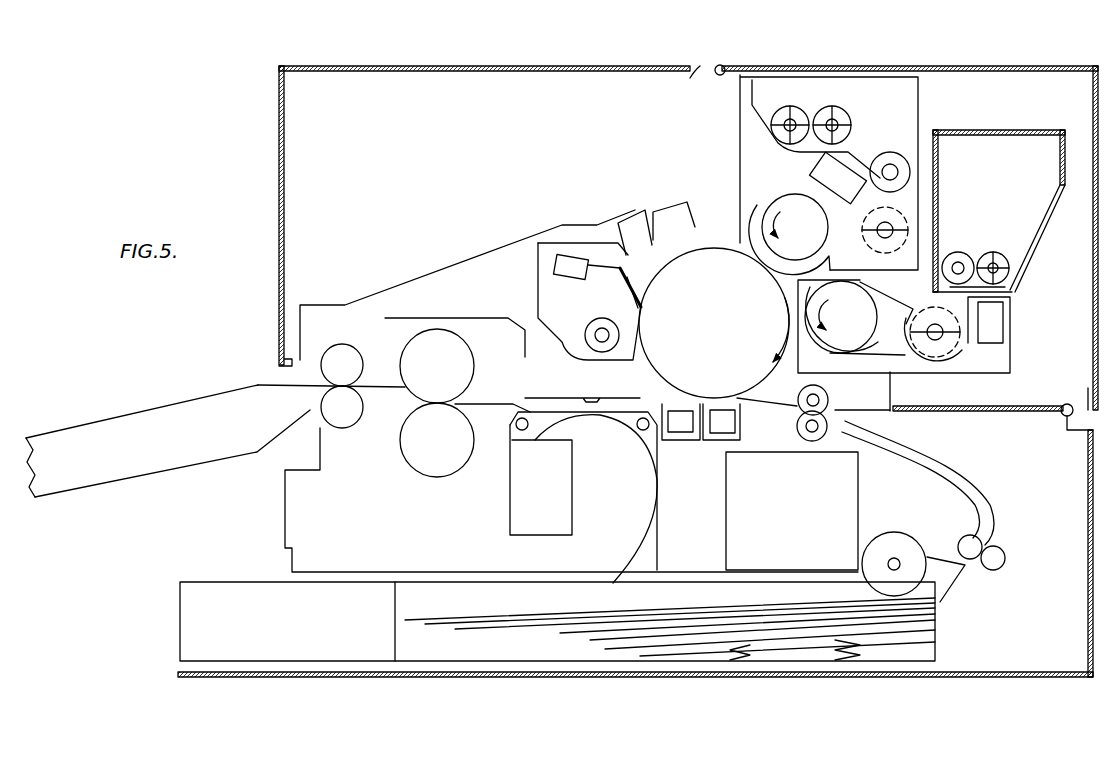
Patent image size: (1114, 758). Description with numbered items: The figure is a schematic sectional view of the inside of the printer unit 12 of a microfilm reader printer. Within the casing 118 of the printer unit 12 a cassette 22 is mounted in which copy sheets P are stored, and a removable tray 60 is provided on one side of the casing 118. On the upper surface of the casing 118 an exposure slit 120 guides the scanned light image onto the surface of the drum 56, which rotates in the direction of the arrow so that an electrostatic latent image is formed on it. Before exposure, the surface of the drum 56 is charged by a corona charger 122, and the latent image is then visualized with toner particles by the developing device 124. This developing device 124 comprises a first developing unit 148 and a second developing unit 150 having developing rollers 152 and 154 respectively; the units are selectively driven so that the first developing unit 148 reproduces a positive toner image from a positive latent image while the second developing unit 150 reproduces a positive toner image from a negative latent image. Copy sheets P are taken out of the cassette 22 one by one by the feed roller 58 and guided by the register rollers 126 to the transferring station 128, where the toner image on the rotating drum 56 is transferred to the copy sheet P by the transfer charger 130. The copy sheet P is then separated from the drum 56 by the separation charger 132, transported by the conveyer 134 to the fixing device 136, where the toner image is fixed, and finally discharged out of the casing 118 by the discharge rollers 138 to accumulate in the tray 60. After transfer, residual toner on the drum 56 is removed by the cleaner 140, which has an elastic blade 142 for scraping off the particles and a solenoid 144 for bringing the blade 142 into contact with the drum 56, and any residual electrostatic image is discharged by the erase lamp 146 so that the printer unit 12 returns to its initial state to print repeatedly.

The printer unit 12 is at (487, 102).
The cassette 22 is at (346, 650).
The drum 56 is at (665, 364).
The feed roller 58 is at (896, 548).
The tray 60 is at (158, 404).
The casing 118 is at (279, 110).
The exposure slit 120 is at (701, 74).
The corona charger 122 is at (672, 200).
The developing device 124 is at (1040, 102).
The register rollers 126 is at (828, 426).
The transferring station 128 is at (713, 397).
The transfer charger 130 is at (718, 432).
The separation charger 132 is at (681, 432).
The conveyer 134 is at (598, 397).
The fixing device 136 is at (463, 366).
The discharge rollers 138 is at (332, 405).
The cleaner 140 is at (470, 280).
The elastic blade 142 is at (624, 285).
The solenoid 144 is at (569, 258).
The erase lamp 146 is at (630, 215).
The first developing unit 148 is at (827, 153).
The second developing unit 150 is at (1030, 215).
The developing roller 152 is at (766, 196).
The developing roller 154 is at (782, 305).
The copy sheet P is at (792, 618).